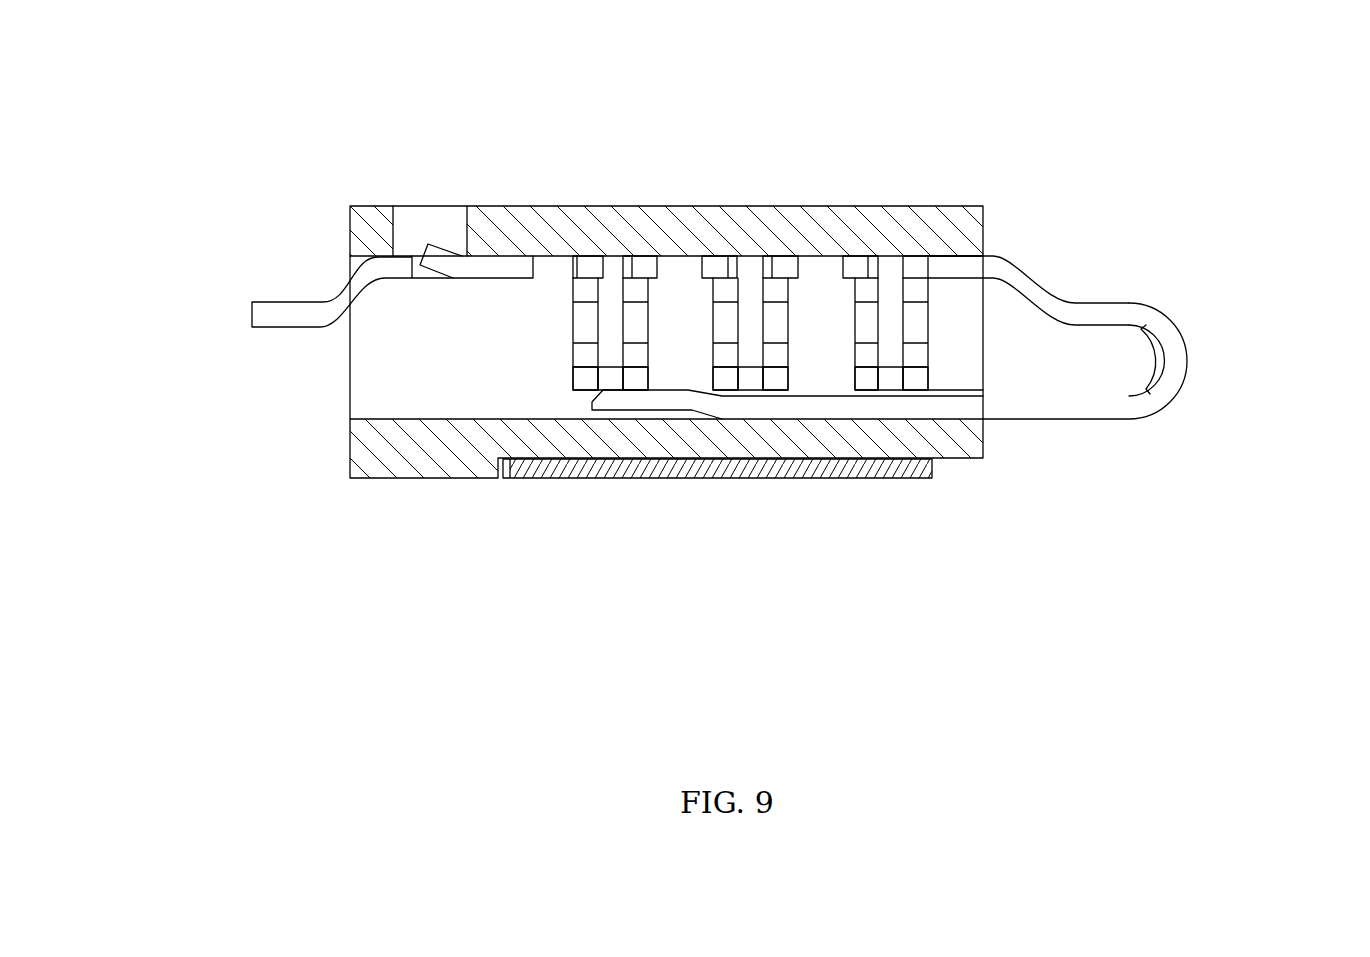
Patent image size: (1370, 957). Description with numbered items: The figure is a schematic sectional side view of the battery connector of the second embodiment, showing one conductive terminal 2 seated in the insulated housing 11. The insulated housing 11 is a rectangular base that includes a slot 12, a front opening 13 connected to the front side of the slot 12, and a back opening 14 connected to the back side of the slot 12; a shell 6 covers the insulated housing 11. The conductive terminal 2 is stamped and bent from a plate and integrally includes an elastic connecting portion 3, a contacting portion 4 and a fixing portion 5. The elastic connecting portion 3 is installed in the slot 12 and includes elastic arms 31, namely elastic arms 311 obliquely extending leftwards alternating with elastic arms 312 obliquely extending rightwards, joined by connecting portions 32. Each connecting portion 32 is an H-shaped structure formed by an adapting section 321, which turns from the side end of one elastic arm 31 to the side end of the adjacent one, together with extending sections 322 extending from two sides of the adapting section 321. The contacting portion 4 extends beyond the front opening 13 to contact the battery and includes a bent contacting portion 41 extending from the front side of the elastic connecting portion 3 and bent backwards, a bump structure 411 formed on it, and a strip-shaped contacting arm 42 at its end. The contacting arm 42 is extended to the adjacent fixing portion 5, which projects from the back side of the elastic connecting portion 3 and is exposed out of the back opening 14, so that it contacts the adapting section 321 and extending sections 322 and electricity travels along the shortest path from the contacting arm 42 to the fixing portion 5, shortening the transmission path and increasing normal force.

The conductive terminal 2 is at (1223, 155).
The elastic connecting portion 3 is at (605, 172).
The elastic arm 31 is at (882, 60).
The elastic arm obliquely extending leftwards 311 is at (715, 257).
The elastic arm obliquely extending rightwards 312 is at (788, 257).
The connecting portion 32 is at (598, 613).
The adapting section 321 is at (612, 382).
The extending section 322 is at (577, 378).
The contacting portion 4 is at (1190, 403).
The bent contacting portion 41 is at (1172, 333).
The bump structure 411 is at (1176, 357).
The contacting arm 42 is at (667, 405).
The fixing portion 5 is at (272, 267).
The shell 6 is at (843, 473).
The insulated housing 11 is at (392, 462).
The slot 12 is at (965, 384).
The front opening 13 is at (980, 341).
The back opening 14 is at (368, 392).